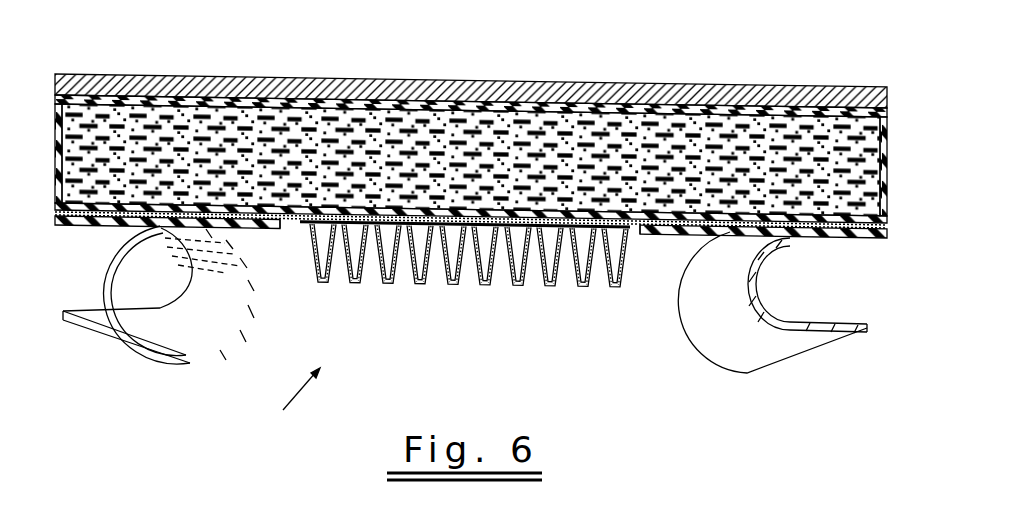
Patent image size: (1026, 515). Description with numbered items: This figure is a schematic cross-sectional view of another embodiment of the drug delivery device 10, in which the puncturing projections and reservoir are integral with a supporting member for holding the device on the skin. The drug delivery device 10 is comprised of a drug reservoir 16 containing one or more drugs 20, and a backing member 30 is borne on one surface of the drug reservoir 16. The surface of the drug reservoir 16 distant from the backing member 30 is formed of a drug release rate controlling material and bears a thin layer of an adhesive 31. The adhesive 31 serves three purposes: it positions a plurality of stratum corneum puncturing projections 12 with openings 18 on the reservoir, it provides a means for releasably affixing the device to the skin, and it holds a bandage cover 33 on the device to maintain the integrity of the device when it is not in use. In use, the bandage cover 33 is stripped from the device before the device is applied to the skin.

The drug delivery device 10 is at (279, 408).
The stratum corneum puncturing projections 12 is at (588, 285).
The drug reservoir 16 is at (254, 105).
The openings 18 is at (418, 285).
The drugs 20 is at (757, 135).
The backing member 30 is at (640, 95).
The adhesive 31 is at (277, 227).
The bandage cover 33 is at (175, 340).